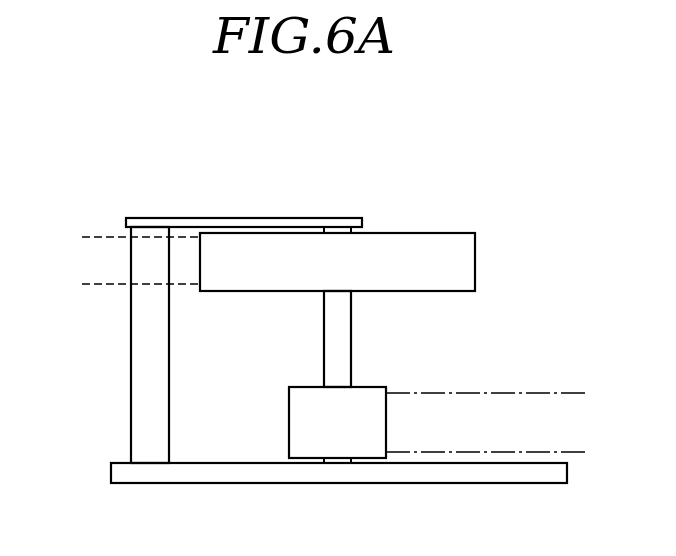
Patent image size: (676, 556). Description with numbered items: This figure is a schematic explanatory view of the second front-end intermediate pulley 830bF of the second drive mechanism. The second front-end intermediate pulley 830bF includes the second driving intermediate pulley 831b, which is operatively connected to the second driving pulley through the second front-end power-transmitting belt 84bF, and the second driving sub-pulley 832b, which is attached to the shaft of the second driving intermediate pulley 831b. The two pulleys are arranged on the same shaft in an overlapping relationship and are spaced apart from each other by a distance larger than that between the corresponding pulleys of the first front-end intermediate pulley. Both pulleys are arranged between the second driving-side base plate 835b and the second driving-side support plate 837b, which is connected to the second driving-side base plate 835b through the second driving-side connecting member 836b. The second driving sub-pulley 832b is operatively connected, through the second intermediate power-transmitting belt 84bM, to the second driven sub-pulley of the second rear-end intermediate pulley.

The second front-end intermediate pulley 830bF is at (472, 152).
The second driving intermediate pulley 831b is at (475, 258).
The second driving sub-pulley 832b is at (367, 386).
The second driving-side base plate 835b is at (211, 483).
The second driving-side connecting member 836b is at (130, 373).
The second driving-side support plate 837b is at (268, 217).
The second front-end power-transmitting belt 84bF is at (101, 237).
The second intermediate power-transmitting belt 84bM is at (577, 453).